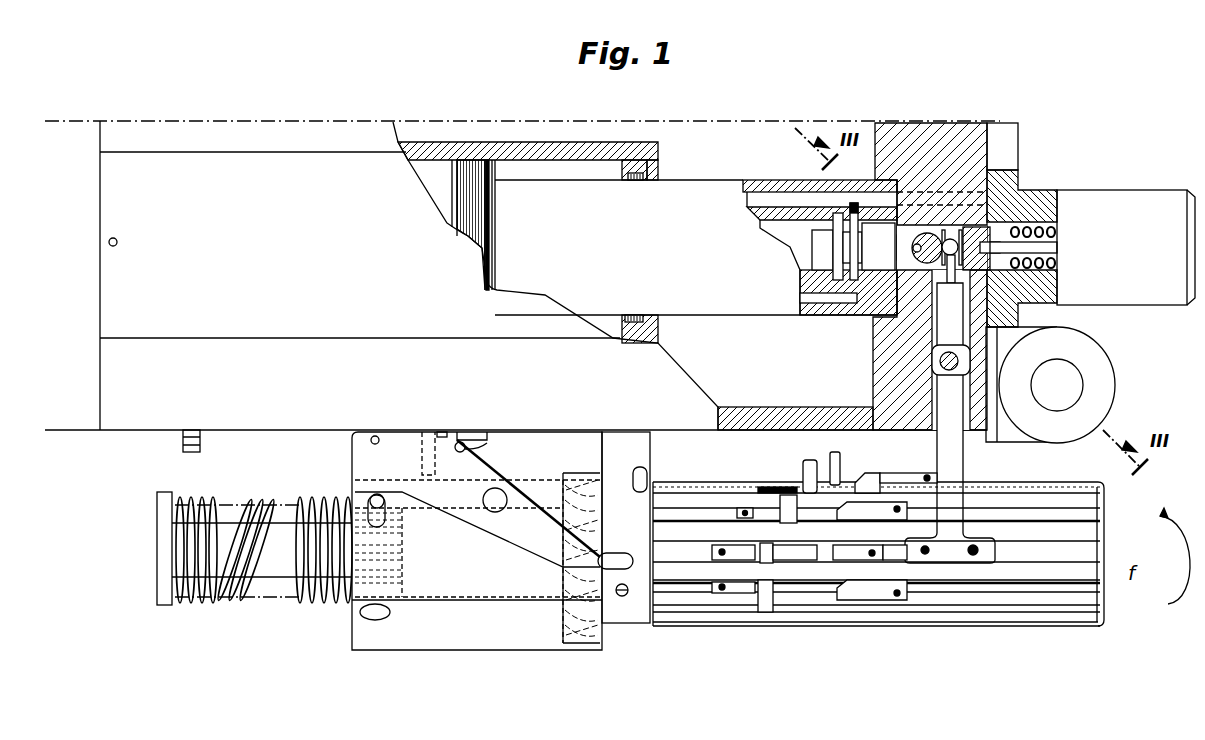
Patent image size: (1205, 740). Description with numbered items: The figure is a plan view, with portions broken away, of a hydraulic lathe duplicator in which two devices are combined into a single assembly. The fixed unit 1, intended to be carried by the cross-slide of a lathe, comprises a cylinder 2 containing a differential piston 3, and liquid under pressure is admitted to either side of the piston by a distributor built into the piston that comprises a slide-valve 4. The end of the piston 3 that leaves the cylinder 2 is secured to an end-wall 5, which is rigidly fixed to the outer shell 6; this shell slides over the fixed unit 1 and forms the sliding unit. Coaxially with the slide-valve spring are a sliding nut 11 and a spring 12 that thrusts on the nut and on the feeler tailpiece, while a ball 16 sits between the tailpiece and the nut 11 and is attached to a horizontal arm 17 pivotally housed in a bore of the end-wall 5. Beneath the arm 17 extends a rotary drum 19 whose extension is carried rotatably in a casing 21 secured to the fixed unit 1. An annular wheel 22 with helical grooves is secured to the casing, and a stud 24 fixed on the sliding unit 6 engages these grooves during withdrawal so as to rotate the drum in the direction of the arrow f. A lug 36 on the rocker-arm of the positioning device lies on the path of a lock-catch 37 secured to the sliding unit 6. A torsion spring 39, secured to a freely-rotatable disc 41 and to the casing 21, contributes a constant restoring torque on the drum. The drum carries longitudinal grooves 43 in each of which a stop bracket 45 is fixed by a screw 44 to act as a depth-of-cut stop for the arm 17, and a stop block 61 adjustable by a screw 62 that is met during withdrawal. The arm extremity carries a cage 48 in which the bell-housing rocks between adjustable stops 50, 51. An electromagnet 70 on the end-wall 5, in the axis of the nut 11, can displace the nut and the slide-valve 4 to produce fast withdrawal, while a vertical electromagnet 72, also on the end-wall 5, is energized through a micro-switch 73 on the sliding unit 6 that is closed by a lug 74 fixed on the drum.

The fixed unit 1 is at (64, 414).
The cylinder 2 is at (545, 146).
The differential piston 3 is at (462, 165).
The slide-valve 4 is at (848, 257).
The end-wall 5 is at (932, 135).
The outer shell 6 is at (212, 165).
The sliding nut 11 is at (1028, 302).
The spring 12 is at (1023, 227).
The ball 16 is at (952, 240).
The horizontal arm 17 is at (960, 470).
The rotary drum 19 is at (832, 628).
The casing 21 is at (442, 645).
The annular wheel 22 is at (593, 650).
The stud 24 is at (420, 448).
The lug 36 is at (353, 435).
The lock-catch 37 is at (182, 438).
The spring 39 is at (205, 603).
The freely-rotatable disc 41 is at (157, 592).
The grooves 43 is at (1072, 585).
The screw 44 is at (722, 590).
The stop bracket 45 is at (783, 498).
The cage 48 is at (950, 563).
The adjustable stop 50 is at (927, 556).
The adjustable stop 51 is at (975, 556).
The stop block 61 is at (875, 598).
The screw 62 is at (897, 600).
The electromagnet 70 is at (1158, 298).
The electromagnet 72 is at (1100, 362).
The micro-switch 73 is at (473, 444).
The lug 74 is at (636, 470).